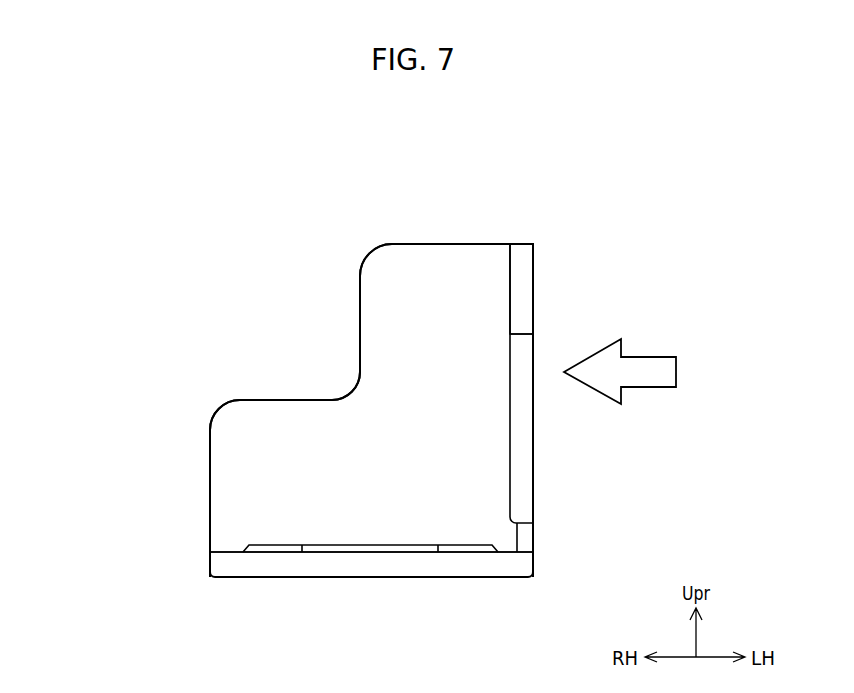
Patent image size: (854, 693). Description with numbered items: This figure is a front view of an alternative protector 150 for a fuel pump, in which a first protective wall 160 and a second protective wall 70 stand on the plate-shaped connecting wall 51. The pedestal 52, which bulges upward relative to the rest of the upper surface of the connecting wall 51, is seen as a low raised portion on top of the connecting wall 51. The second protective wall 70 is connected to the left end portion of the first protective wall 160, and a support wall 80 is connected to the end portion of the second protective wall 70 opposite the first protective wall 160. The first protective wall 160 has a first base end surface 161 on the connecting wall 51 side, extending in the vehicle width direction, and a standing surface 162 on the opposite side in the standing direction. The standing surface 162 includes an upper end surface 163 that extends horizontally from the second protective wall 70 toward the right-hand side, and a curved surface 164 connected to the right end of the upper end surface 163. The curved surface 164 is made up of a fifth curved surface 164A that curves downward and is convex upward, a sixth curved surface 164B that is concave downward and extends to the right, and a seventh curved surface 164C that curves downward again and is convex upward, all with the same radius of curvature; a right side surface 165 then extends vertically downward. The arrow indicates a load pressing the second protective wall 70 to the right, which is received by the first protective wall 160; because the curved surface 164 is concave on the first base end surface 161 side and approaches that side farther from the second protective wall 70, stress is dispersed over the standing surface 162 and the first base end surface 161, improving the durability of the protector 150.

The protector 150 is at (137, 225).
The first protective wall 160 is at (438, 244).
The standing surface 162 is at (376, 243).
The upper end surface 163 is at (482, 244).
The curved surface 164 is at (355, 212).
The fifth curved surface 164A is at (365, 265).
The sixth curved surface 164B is at (347, 390).
The seventh curved surface 164C is at (217, 415).
The right side surface 165 is at (210, 480).
The first base end surface 161 is at (210, 552).
The second protective wall 70 is at (528, 269).
The support wall 80 is at (528, 538).
The connecting wall 51 is at (282, 578).
The pedestal 52 is at (341, 545).